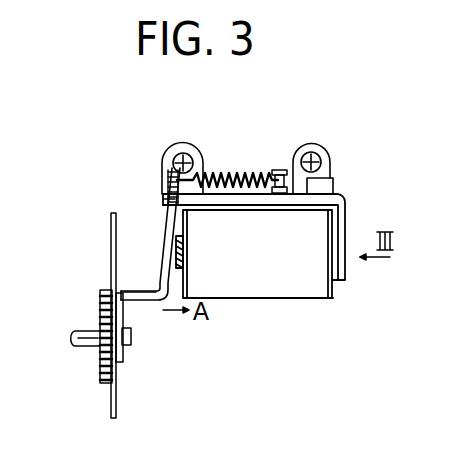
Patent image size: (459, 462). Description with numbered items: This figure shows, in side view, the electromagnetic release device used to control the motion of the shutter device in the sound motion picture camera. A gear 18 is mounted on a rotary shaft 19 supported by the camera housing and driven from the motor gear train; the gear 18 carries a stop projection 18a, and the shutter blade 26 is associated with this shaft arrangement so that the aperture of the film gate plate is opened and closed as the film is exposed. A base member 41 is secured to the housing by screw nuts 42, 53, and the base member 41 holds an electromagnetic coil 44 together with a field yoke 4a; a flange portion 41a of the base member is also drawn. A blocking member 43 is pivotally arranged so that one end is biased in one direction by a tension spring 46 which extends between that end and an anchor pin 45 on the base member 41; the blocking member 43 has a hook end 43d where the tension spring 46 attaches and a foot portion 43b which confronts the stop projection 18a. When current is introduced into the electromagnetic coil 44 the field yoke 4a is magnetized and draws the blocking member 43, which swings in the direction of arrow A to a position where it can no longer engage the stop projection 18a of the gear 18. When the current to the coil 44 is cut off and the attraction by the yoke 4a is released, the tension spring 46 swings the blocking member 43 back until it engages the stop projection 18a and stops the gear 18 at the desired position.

The field yoke 4a is at (186, 251).
The gear 18 is at (99, 295).
The stop projection 18a is at (121, 312).
The rotary shaft 19 is at (131, 340).
The shutter blade 26 is at (109, 221).
The base member 41 is at (165, 205).
The yoke flange 41a is at (165, 198).
The screw nut 42 is at (183, 153).
The blocking member 43 is at (166, 277).
The lever foot 43b is at (130, 292).
The lever hook end 43d is at (172, 182).
The electromagnetic coil 44 is at (295, 283).
The anchor pin 45 is at (276, 169).
The tension spring 46 is at (232, 172).
The screw nut 53 is at (309, 152).